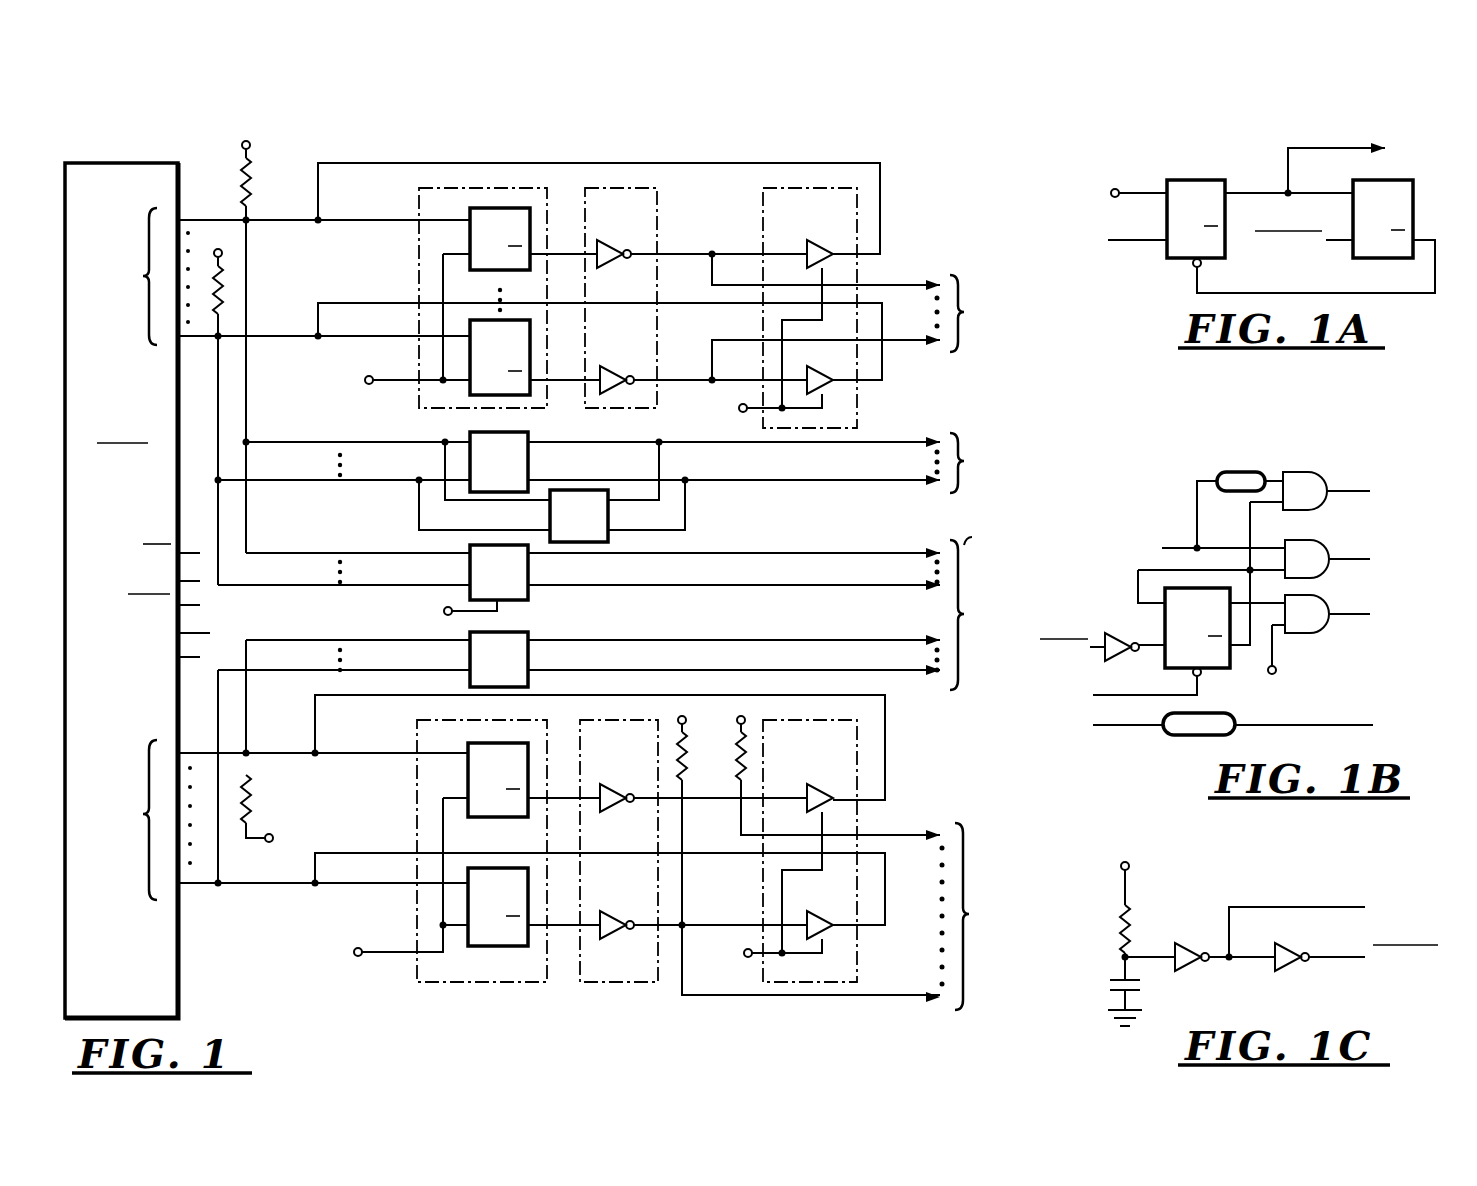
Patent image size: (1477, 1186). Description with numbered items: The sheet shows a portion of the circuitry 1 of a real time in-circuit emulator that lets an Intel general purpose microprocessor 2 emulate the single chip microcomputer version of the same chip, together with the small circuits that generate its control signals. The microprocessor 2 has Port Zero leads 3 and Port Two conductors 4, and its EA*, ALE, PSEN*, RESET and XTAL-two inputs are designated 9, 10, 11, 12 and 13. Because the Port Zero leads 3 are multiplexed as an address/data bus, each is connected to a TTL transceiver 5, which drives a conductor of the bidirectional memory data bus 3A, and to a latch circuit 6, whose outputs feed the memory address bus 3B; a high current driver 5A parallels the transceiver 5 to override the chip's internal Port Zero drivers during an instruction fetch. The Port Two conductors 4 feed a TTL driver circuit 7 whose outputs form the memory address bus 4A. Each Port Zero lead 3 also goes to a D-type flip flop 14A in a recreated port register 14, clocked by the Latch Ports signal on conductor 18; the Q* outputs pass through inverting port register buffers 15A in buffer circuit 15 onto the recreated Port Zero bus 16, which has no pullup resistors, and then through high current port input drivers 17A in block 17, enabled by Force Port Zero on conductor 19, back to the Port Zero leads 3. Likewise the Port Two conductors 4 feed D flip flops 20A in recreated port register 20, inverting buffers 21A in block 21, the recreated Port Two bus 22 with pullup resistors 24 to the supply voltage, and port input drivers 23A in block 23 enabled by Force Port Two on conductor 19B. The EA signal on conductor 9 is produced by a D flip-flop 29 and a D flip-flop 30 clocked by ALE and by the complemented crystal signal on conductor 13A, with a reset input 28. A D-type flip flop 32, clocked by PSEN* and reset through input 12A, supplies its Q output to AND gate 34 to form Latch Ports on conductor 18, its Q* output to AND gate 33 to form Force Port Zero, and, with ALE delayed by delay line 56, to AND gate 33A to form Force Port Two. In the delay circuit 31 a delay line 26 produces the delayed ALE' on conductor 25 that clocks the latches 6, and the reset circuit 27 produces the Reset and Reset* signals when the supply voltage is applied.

In FIG. 1, the emulator circuitry 1 is at (382, 988).
In FIG. 1, the microprocessor 2 is at (126, 951).
In FIG. 1, the Port 0 leads 3 is at (204, 348).
In FIG. 1, the bidirectional memory data bus 3A is at (962, 440).
In FIG. 1, the memory address bus 3B is at (886, 545).
In FIG. 1, the Port 2 conductors 4 is at (210, 749).
In FIG. 1, the memory address bus 4A is at (756, 632).
In FIG. 1, the TTL transceiver 5 is at (530, 466).
In FIG. 1, the high current driver 5A is at (548, 518).
In FIG. 1, the latch circuit 6 is at (530, 572).
In FIG. 1, the TTL driver circuit 7 is at (530, 660).
In FIG. 1, the EA input 9 is at (200, 553).
In FIG. 1A, the EA input 9 is at (1349, 150).
In FIG. 1, the ALE input 10 is at (202, 571).
In FIG. 1A, the ALE input 10 is at (1150, 240).
In FIG. 1B, the ALE input 10 is at (1191, 528).
In FIG. 1, the PSEN* input 11 is at (202, 595).
In FIG. 1B, the PSEN* input 11 is at (1100, 636).
In FIG. 1, the RESET input 12 is at (212, 623).
In FIG. 1C, the RESET input 12 is at (1352, 895).
In FIG. 1B, the reset input 12A is at (1150, 694).
In FIG. 1, the XTAL2 input 13 is at (190, 660).
In FIG. 1A, the XTAL2* conductor 13A is at (1342, 243).
In FIG. 1, the recreated port register 14 is at (419, 278).
In FIG. 1, the D-type flip flop 14A is at (476, 206).
In FIG. 1, the port register buffer circuit 15 is at (620, 188).
In FIG. 1, the port register buffer 15A is at (626, 240).
In FIG. 1, the recreated Port 0 bus 16 is at (910, 274).
In FIG. 1, the high current port input driver block 17 is at (852, 190).
In FIG. 1, the high current port input driver 17A is at (834, 240).
In FIG. 1, the Latch Ports conductor 18 is at (372, 376).
In FIG. 1B, the Latch Ports conductor 18 is at (1363, 594).
In FIG. 1, the Force Port 0 conductor 19 is at (747, 410).
In FIG. 1B, the Force Port 0 conductor 19 is at (1359, 548).
In FIG. 1, the Force Port 2 conductor 19B is at (775, 956).
In FIG. 1B, the Force Port 2 conductor 19B is at (1362, 496).
In FIG. 1, the recreated port register 20 is at (418, 729).
In FIG. 1, the D flip flop 20A is at (480, 744).
In FIG. 1, the port register buffer block 21 is at (620, 722).
In FIG. 1, the inverting buffer 21A is at (632, 784).
In FIG. 1, the recreated Port 2 bus 22 is at (906, 822).
In FIG. 1, the high current port input driver block 23 is at (812, 722).
In FIG. 1, the high current port input driver 23A is at (832, 784).
In FIG. 1, the pullup resistor 24 is at (738, 743).
In FIG. 1B, the ALE' conductor 25 is at (1340, 725).
In FIG. 1B, the delay line 26 is at (1230, 713).
In FIG. 1C, the reset circuit 27 is at (1238, 976).
In FIG. 1A, the flip-flop reset input 28 is at (1188, 277).
In FIG. 1A, the D flip-flop 29 is at (1205, 180).
In FIG. 1A, the D flip-flop 30 is at (1413, 196).
In FIG. 1B, the delay circuit 31 is at (1114, 740).
In FIG. 1B, the D-type flip flop 32 is at (1164, 608).
In FIG. 1B, the AND gate 33 is at (1312, 540).
In FIG. 1B, the AND gate 33A is at (1312, 472).
In FIG. 1B, the AND gate 34 is at (1318, 636).
In FIG. 1B, the delay line 56 is at (1245, 472).